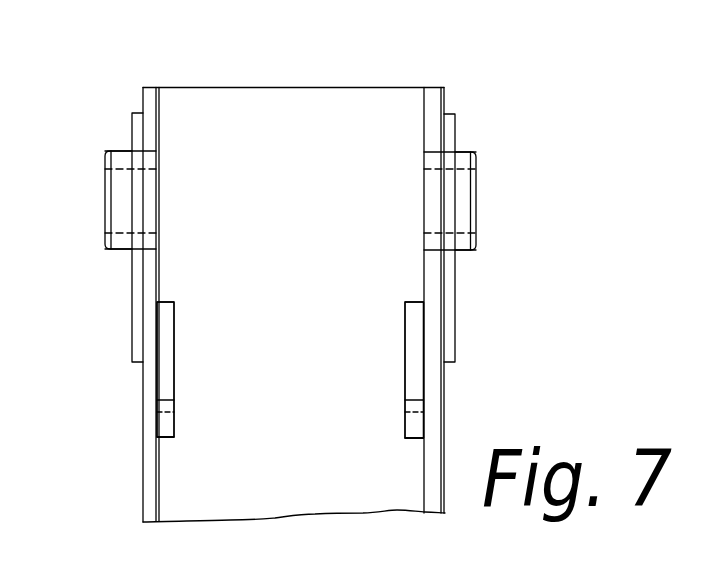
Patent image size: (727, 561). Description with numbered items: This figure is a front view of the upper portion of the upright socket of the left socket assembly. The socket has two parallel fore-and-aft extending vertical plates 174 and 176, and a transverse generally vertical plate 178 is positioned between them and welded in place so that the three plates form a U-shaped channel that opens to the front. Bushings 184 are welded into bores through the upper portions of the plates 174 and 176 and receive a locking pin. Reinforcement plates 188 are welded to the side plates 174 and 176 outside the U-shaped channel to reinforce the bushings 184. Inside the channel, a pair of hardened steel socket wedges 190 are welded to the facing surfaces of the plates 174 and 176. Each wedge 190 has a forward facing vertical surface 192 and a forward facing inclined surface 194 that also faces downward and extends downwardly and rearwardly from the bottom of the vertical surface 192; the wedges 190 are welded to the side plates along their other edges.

The vertical plate 174 is at (445, 112).
The vertical plate 176 is at (143, 95).
The transverse generally vertical plate 178 is at (282, 87).
The bushings 184 is at (120, 153).
The reinforcement plates 188 is at (130, 278).
The socket wedges 190 is at (175, 334).
The forward facing vertical surfaces 192 is at (163, 375).
The forward facing inclined surfaces 194 is at (162, 420).